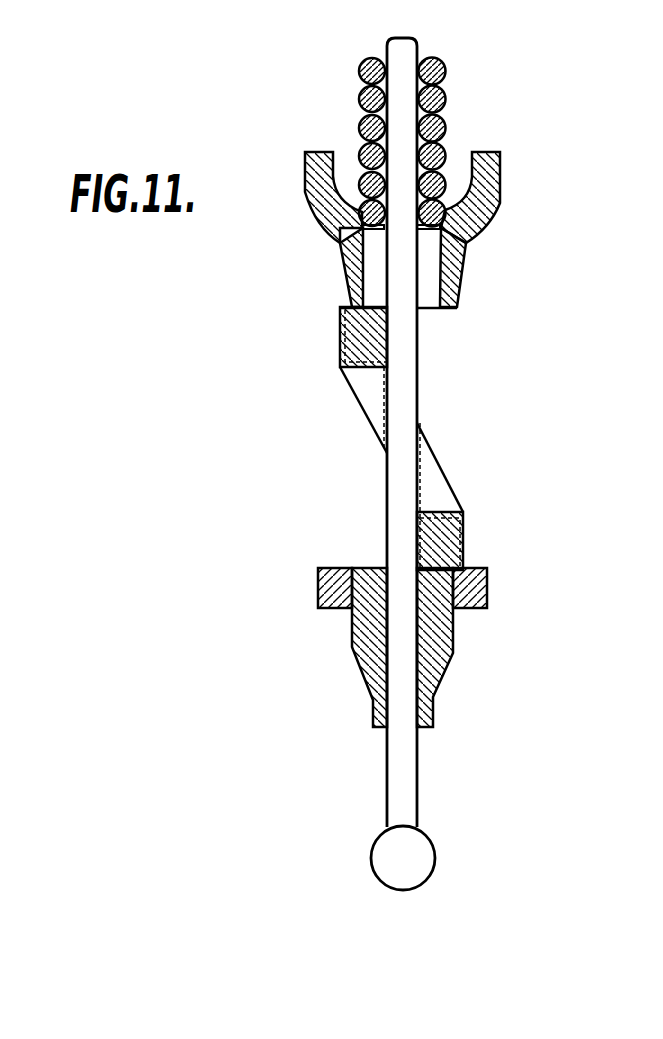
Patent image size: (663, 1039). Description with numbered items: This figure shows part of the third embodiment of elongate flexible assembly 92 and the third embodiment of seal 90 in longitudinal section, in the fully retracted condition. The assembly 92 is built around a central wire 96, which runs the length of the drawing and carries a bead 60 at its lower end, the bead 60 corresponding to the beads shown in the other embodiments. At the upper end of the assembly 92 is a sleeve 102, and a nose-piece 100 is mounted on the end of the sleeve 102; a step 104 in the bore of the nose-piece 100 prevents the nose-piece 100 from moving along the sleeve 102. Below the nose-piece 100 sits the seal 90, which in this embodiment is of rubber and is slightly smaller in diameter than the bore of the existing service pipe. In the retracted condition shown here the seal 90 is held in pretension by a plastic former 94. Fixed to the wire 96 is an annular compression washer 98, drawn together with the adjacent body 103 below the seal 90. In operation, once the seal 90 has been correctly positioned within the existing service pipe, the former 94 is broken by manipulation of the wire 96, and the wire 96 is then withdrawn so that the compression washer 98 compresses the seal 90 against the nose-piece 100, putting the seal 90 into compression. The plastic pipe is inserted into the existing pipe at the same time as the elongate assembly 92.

The wire 96 is at (412, 42).
The elongate assembly 92 is at (447, 87).
The sleeve 102 is at (368, 100).
The nose-piece 100 is at (488, 202).
The step 104 is at (353, 232).
The plastic former 94 is at (337, 363).
The seal 90 is at (430, 477).
The annular compression washer 98 is at (330, 583).
The guide body 103 is at (360, 657).
The bead 60 is at (380, 848).